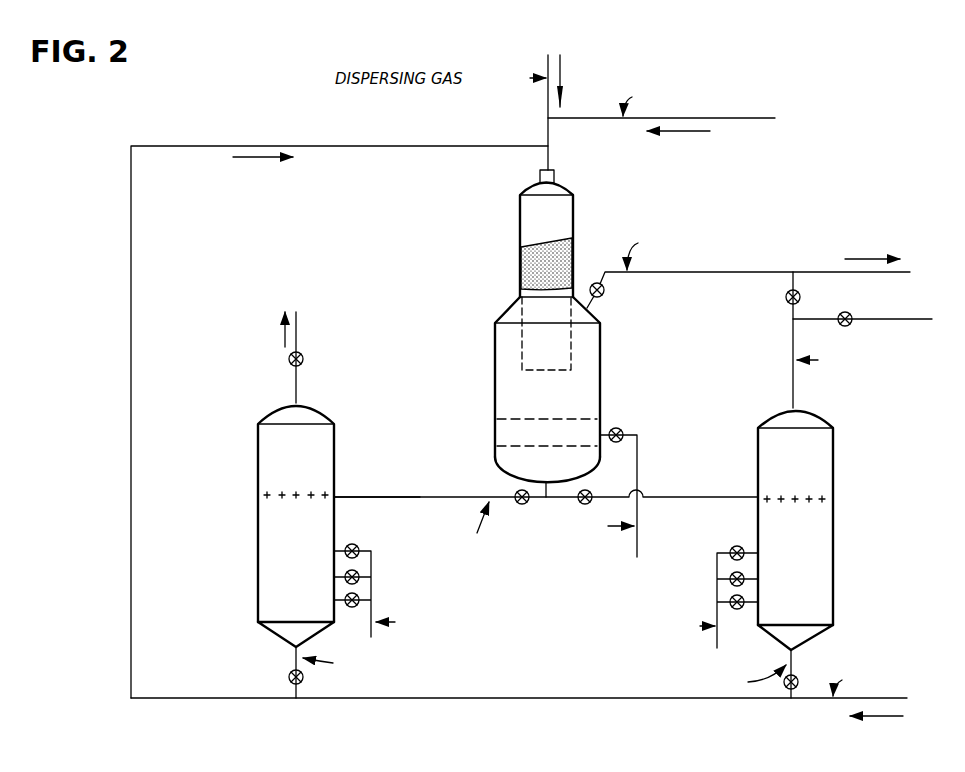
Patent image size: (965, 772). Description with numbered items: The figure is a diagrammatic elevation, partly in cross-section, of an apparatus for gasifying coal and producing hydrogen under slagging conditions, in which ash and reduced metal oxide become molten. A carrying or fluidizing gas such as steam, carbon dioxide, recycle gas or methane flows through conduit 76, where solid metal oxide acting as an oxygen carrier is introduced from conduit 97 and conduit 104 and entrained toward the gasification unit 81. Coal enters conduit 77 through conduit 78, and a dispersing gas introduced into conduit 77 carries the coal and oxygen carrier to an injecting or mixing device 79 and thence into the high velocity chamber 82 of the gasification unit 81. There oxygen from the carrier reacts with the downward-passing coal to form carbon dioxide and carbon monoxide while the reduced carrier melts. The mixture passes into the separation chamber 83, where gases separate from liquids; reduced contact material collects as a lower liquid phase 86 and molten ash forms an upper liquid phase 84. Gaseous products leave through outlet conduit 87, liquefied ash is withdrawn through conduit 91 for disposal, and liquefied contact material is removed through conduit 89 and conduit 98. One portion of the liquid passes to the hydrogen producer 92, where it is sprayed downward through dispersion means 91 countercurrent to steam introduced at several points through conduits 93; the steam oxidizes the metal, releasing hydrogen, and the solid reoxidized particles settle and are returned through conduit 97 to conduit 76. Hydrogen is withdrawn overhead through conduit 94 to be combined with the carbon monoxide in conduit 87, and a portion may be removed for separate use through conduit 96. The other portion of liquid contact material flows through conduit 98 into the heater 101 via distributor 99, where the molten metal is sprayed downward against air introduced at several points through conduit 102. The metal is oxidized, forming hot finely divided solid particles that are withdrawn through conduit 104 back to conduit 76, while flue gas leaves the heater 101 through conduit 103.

The conduit 76 is at (820, 701).
The conduit 77 is at (548, 131).
The conduit 78 is at (571, 120).
The injecting or mixing device 79 is at (557, 175).
The gasification unit 81 is at (575, 242).
The high velocity chamber 82 is at (557, 219).
The separation chamber 83 is at (510, 386).
The upper liquid phase 84 is at (510, 432).
The lower liquid phase 86 is at (510, 462).
The outlet conduit 87 is at (607, 275).
The conduit 89 is at (723, 503).
The conduit 91 is at (637, 465).
The hydrogen producer 92 is at (817, 535).
The conduits 93 is at (717, 570).
The conduit 94 is at (793, 392).
The conduit 96 is at (812, 321).
The conduit 97 is at (794, 667).
The conduit 98 is at (353, 500).
The distributor 99 is at (262, 490).
The heater 101 is at (270, 565).
The conduit 102 is at (372, 590).
The conduit 103 is at (296, 382).
The conduit 104 is at (290, 653).